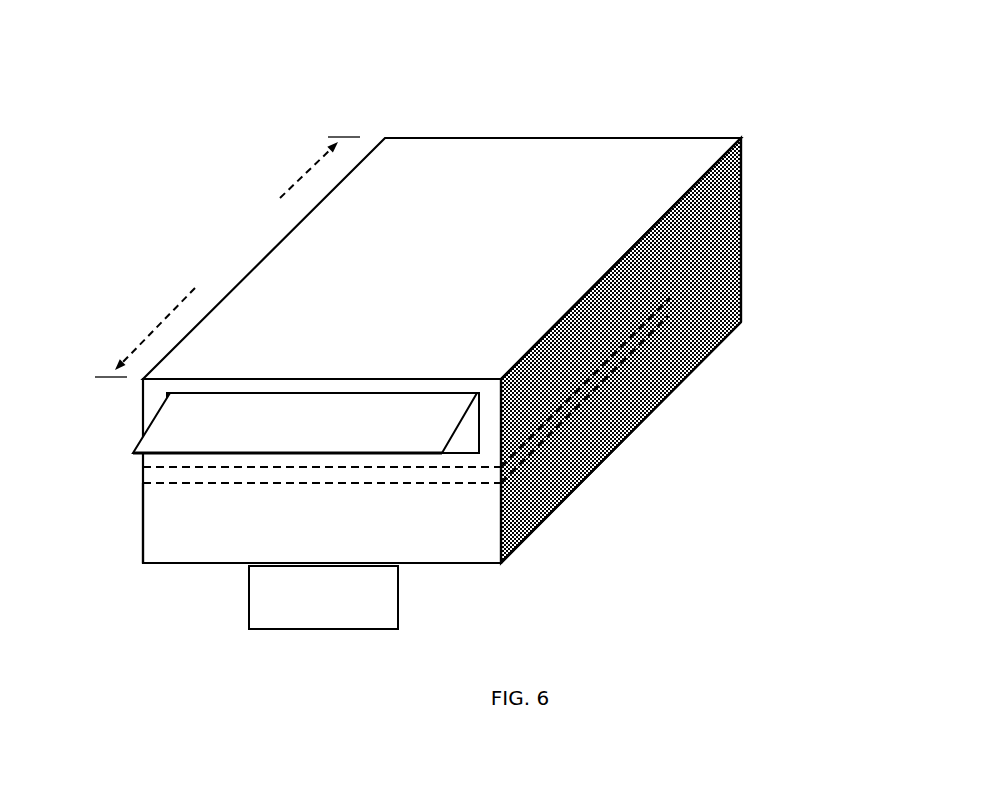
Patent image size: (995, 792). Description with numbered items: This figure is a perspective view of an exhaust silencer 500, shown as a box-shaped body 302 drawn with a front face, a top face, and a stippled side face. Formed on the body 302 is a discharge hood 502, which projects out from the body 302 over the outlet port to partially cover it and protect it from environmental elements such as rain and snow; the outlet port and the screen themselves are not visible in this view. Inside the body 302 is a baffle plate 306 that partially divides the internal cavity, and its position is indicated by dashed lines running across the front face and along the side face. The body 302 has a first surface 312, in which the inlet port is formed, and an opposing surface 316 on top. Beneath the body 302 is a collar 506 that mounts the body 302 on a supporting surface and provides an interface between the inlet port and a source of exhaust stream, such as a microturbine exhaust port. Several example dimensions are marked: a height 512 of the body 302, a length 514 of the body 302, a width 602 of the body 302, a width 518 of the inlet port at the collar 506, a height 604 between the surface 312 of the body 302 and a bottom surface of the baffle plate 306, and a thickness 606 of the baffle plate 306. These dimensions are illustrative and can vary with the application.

The exhaust silencer 500 is at (153, 120).
The body 302 is at (331, 202).
The length 514 is at (166, 303).
The width 602 is at (741, 87).
The surface 316 is at (647, 160).
The height 512 is at (808, 138).
The discharge hood 502 is at (311, 417).
The thickness 606 is at (107, 518).
The height 604 is at (68, 425).
The first surface 312 is at (657, 413).
The baffle plate 306 is at (562, 422).
The collar 506 is at (398, 590).
The width 518 is at (398, 644).